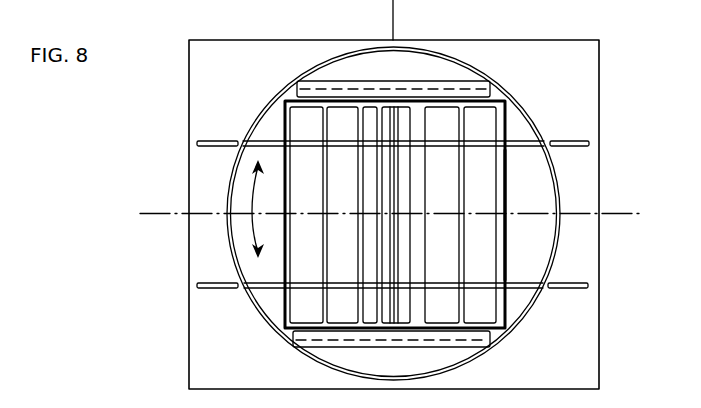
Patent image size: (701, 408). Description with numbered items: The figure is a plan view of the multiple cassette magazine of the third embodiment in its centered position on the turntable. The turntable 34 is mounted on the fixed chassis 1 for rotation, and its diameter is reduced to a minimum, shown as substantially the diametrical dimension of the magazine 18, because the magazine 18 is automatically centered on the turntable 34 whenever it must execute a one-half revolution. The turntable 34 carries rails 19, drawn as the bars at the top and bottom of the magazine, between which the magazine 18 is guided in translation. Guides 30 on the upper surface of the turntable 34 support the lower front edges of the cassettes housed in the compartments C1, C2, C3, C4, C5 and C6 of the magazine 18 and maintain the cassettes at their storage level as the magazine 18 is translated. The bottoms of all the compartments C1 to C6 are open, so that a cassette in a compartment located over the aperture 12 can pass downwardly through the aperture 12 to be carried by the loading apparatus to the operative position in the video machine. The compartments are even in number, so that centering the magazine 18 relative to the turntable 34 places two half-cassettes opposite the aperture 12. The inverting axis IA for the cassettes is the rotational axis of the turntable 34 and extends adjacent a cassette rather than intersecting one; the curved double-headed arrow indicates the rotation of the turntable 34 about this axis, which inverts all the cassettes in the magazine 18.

The fixed chassis 1 is at (588, 69).
The aperture 12 is at (400, 257).
The magazine 18 is at (508, 183).
The rails 19 is at (450, 86).
The guides 30 is at (522, 284).
The turntable 34 is at (240, 185).
The inverting axis IA is at (384, 215).
The compartment C1 is at (306, 215).
The compartment C2 is at (342, 215).
The compartment C3 is at (385, 118).
The compartment C4 is at (414, 118).
The compartment C5 is at (442, 215).
The compartment C6 is at (480, 215).